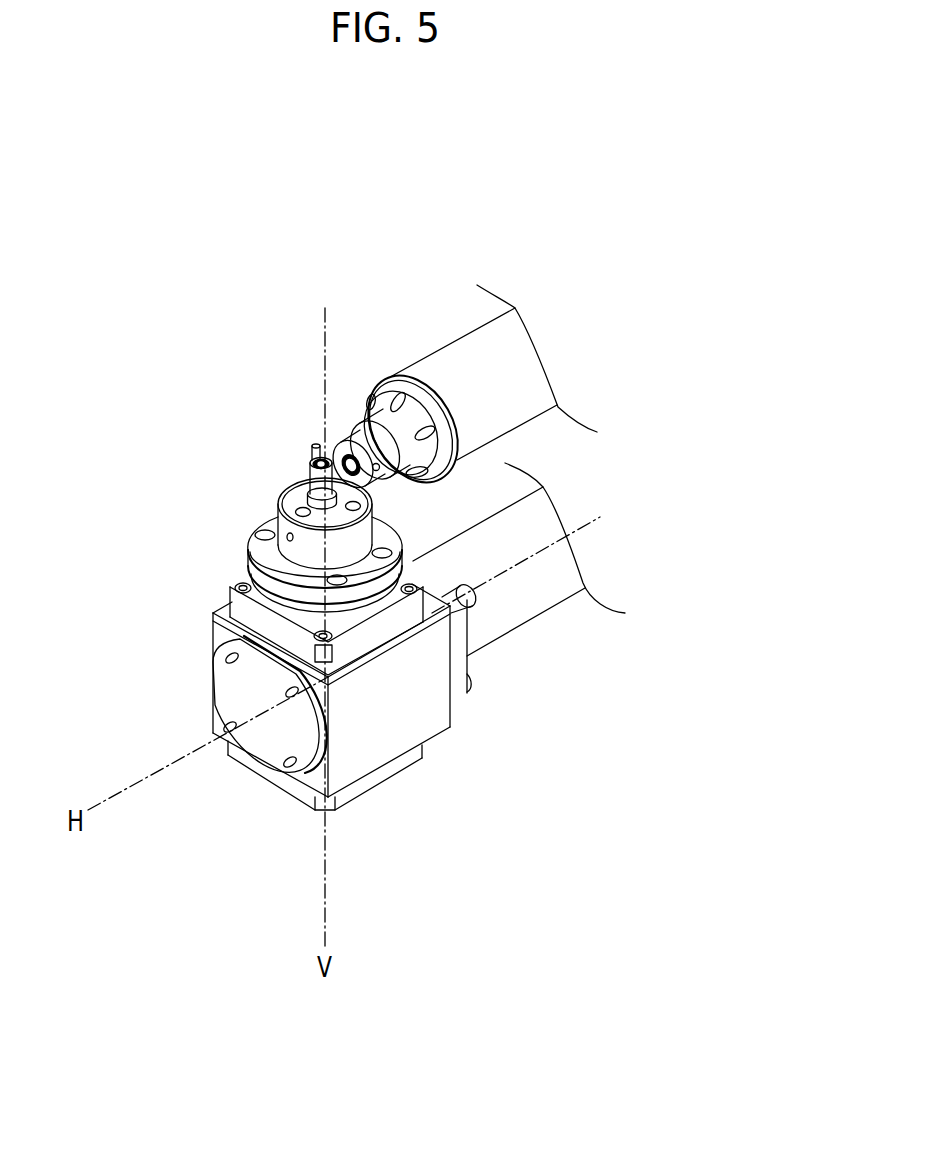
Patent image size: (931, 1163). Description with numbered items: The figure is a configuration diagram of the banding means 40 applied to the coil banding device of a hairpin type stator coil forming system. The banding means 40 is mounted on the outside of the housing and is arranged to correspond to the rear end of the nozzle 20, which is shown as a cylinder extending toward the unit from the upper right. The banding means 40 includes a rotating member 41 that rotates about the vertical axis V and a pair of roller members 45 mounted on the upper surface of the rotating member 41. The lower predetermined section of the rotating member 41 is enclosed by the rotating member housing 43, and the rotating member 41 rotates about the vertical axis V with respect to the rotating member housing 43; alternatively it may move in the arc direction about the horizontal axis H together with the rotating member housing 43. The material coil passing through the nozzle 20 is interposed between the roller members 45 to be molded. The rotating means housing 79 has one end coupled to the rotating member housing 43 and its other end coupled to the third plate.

The nozzle 20 is at (458, 362).
The banding means 40 is at (178, 633).
The rotating member 41 is at (265, 556).
The rotating member housing 43 is at (383, 735).
The roller members 45 is at (308, 477).
The rotating means housing 79 is at (513, 587).